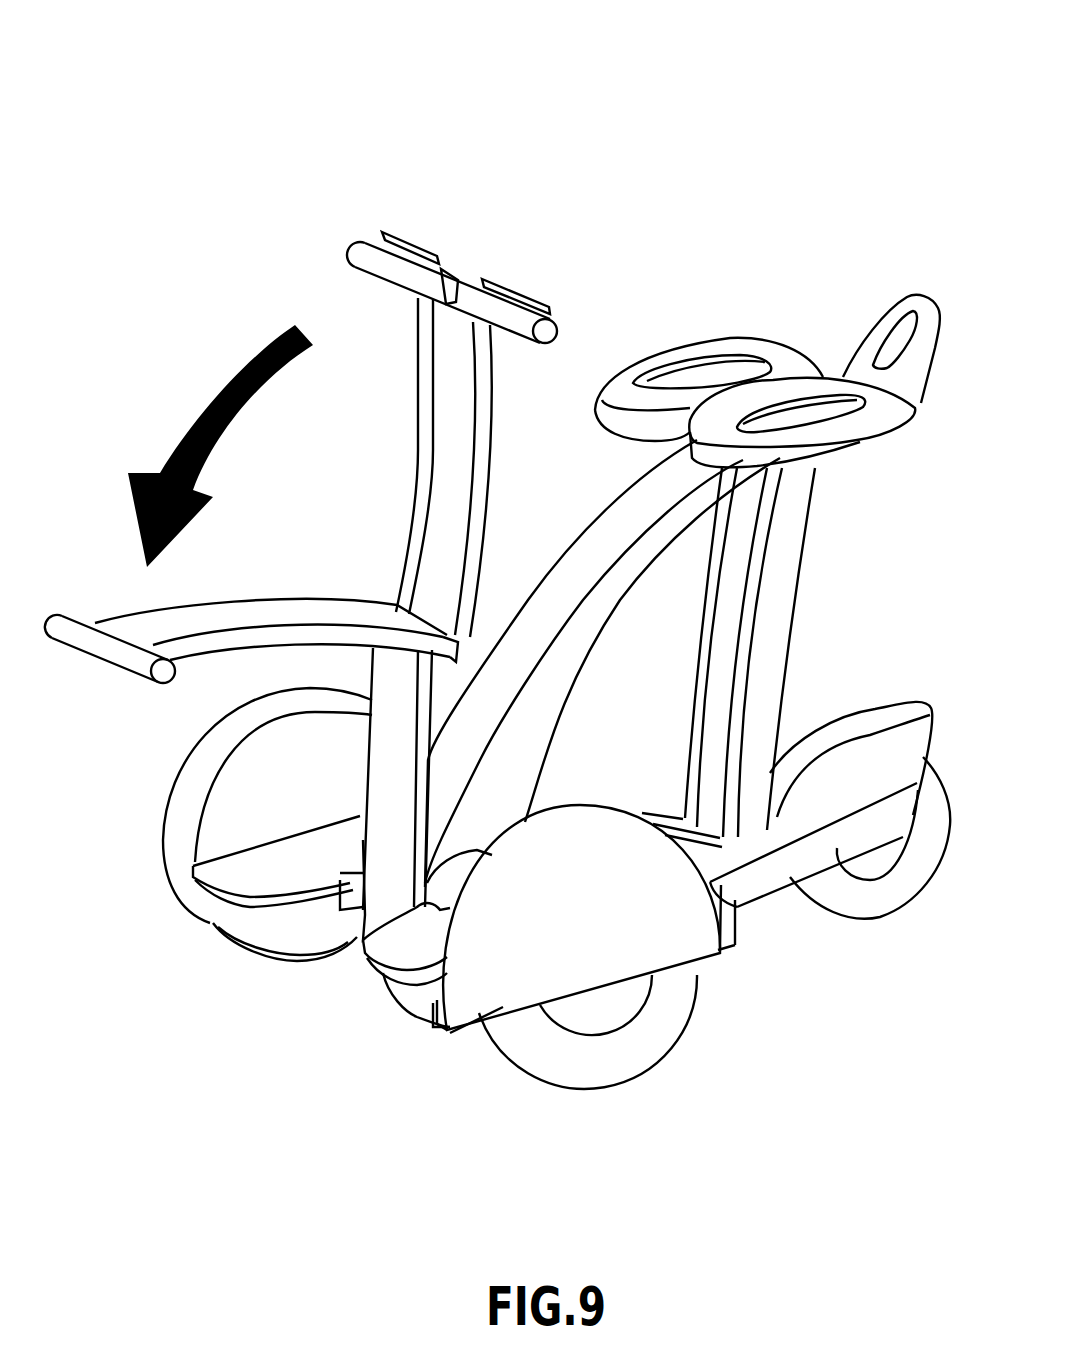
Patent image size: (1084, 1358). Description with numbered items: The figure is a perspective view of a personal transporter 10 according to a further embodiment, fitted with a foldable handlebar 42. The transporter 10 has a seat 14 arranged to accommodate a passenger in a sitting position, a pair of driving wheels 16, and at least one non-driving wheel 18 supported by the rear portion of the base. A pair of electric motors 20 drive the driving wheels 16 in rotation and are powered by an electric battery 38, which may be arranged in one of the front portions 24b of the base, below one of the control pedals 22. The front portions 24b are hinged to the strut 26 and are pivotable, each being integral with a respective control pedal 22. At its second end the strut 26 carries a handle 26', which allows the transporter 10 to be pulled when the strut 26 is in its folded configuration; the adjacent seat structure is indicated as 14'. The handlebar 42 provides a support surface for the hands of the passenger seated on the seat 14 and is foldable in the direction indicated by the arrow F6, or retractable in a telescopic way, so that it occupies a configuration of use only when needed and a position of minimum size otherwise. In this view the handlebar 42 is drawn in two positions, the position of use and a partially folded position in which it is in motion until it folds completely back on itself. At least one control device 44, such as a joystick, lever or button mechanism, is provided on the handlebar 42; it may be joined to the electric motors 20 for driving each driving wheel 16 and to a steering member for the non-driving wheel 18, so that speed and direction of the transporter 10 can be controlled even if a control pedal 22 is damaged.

The personal transporter 10 is at (830, 162).
The seat 14 is at (804, 262).
The seat platform hoop 14' is at (716, 306).
The driving wheel 16 is at (635, 1040).
The non-driving wheel 18 is at (897, 887).
The electric motor 20 is at (627, 990).
The control pedal 22 is at (247, 873).
The front portion 24b is at (253, 917).
The strut 26 is at (602, 663).
The handle 26' is at (900, 299).
The electric battery 38 is at (433, 1003).
The handlebar 42 is at (461, 263).
The control device 44 is at (407, 238).
The arrow F6 is at (237, 397).